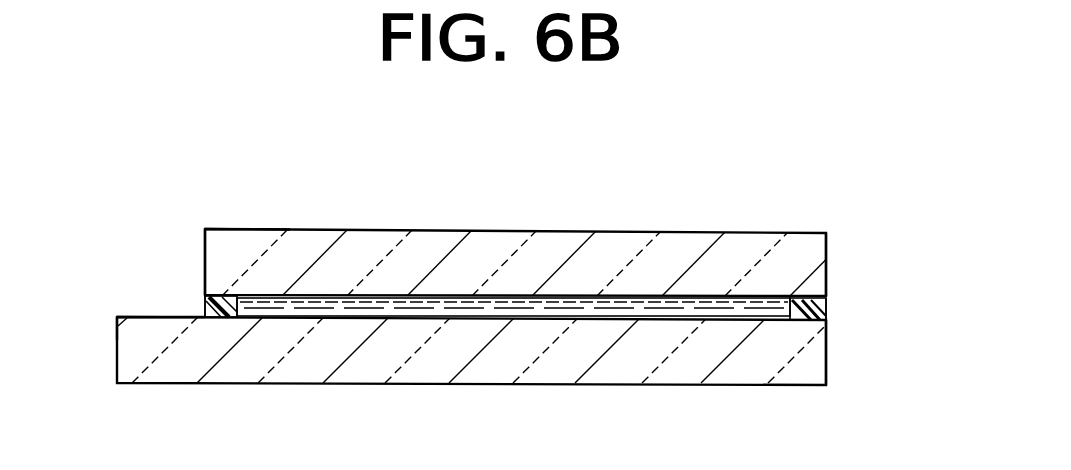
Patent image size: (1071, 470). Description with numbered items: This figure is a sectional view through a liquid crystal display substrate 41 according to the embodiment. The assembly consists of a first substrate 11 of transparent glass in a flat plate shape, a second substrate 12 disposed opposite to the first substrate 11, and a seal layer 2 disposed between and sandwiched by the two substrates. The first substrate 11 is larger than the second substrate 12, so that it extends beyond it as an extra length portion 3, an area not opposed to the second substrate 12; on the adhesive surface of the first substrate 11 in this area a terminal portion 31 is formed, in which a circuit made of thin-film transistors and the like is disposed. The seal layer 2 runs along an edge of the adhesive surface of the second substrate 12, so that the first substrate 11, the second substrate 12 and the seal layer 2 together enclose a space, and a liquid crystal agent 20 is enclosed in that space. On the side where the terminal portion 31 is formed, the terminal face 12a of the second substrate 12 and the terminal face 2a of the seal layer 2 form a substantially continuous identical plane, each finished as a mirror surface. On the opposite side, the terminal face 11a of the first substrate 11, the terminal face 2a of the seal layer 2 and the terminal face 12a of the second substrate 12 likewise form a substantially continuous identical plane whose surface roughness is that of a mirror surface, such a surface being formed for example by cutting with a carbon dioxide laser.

The seal layer 2 is at (229, 318).
The terminal face of the seal layer 2a is at (204, 302).
The extra length portion 3 is at (162, 317).
The first substrate 11 is at (418, 368).
The terminal face of the first substrate 11a is at (828, 358).
The second substrate 12 is at (512, 240).
The terminal face of the second substrate 12a is at (204, 265).
The liquid crystal agent 20 is at (310, 308).
The terminal portion 31 is at (137, 317).
The liquid crystal display substrate 41 is at (329, 215).